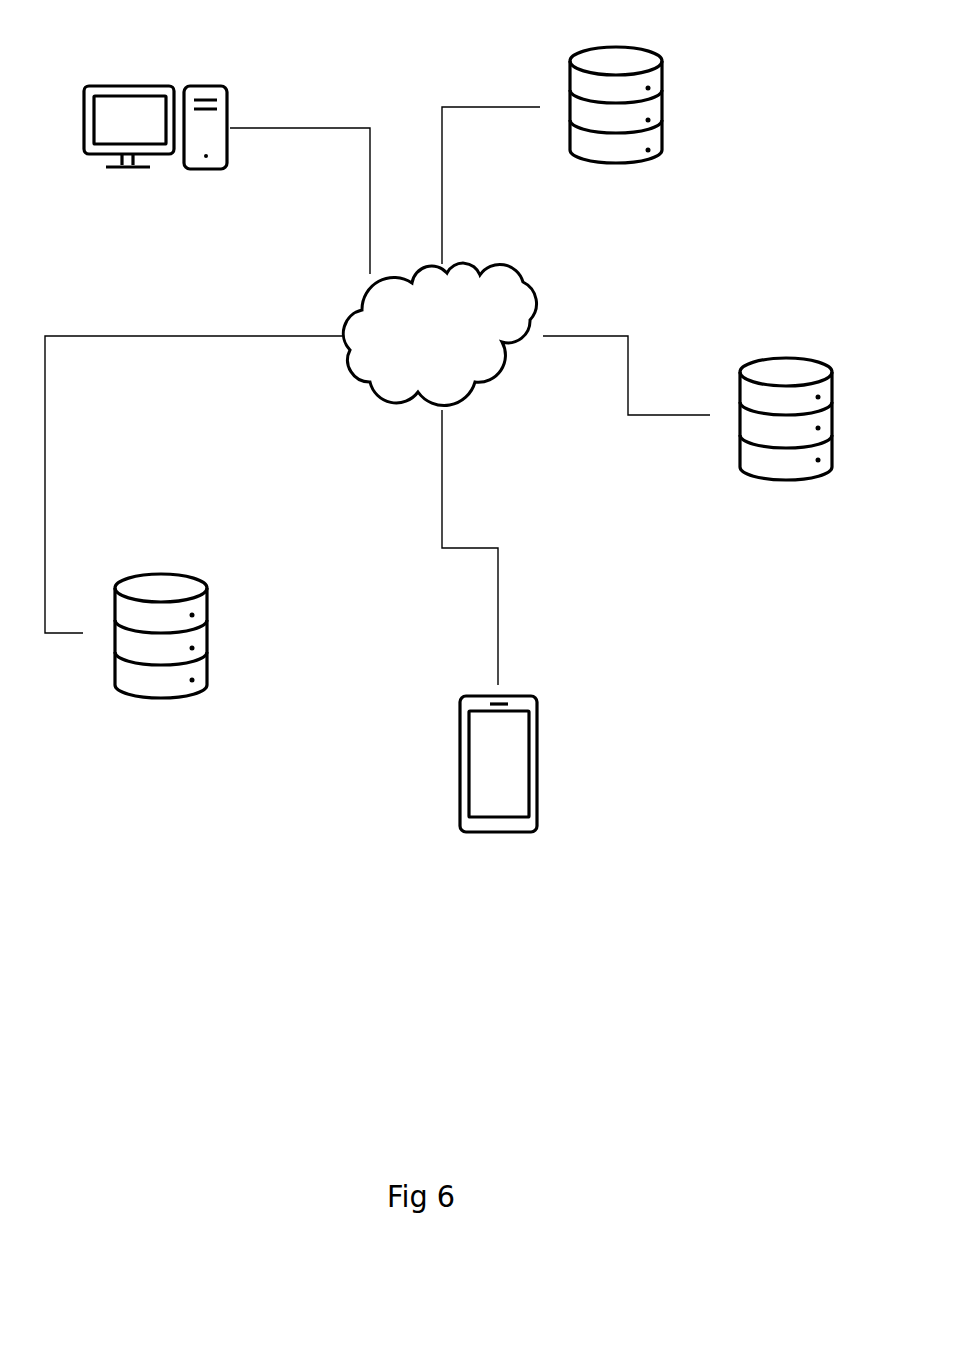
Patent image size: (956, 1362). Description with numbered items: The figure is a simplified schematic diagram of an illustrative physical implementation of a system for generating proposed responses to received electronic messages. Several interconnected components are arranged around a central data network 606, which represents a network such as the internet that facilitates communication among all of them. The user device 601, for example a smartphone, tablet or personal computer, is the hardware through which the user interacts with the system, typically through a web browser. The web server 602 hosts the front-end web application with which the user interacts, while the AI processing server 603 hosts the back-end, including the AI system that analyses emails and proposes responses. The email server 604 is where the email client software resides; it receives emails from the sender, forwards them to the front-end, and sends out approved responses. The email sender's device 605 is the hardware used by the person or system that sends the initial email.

The user device 601 is at (145, 182).
The web server 602 is at (795, 493).
The AI processing server 603 is at (168, 712).
The email server 604 is at (622, 183).
The email sender's device 605 is at (500, 842).
The data network 606 is at (439, 334).